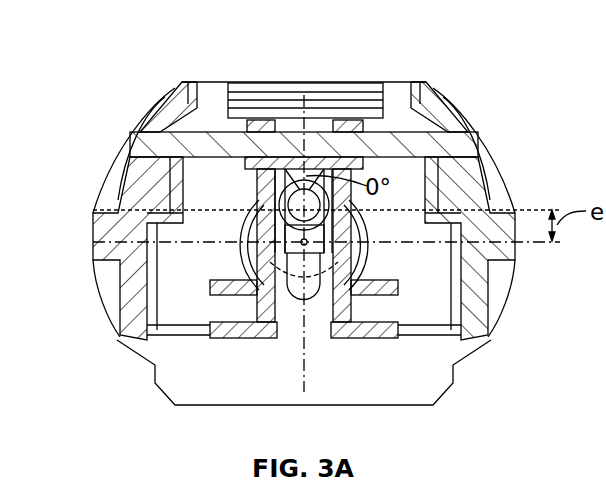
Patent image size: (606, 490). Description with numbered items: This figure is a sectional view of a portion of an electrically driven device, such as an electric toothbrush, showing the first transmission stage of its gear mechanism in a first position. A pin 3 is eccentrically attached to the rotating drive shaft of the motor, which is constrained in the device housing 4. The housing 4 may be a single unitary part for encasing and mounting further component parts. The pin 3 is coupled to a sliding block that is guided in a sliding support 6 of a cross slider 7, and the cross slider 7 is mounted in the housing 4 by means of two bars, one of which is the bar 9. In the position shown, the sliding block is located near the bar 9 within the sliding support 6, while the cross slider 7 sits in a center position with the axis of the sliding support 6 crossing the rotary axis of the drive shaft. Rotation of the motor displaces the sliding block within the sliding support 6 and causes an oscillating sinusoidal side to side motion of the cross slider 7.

The pin 3 is at (299, 202).
The device housing 4 is at (152, 108).
The sliding support 6 is at (288, 125).
The cross slider 7 is at (352, 122).
The bar 9 is at (430, 145).